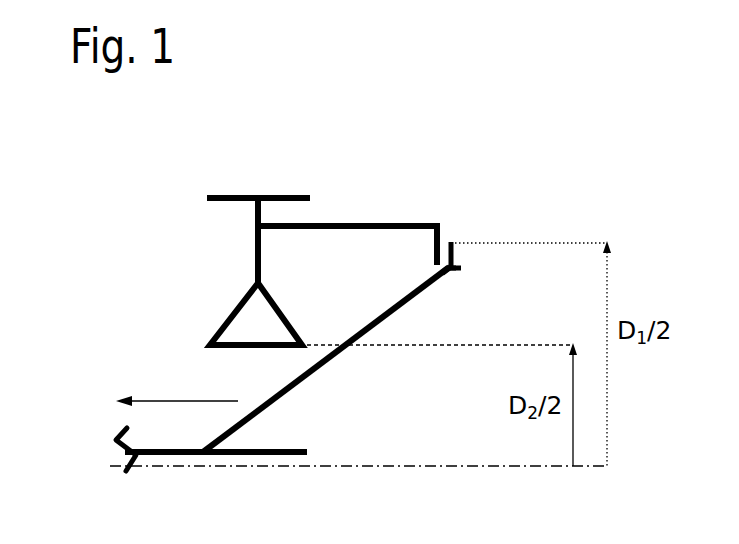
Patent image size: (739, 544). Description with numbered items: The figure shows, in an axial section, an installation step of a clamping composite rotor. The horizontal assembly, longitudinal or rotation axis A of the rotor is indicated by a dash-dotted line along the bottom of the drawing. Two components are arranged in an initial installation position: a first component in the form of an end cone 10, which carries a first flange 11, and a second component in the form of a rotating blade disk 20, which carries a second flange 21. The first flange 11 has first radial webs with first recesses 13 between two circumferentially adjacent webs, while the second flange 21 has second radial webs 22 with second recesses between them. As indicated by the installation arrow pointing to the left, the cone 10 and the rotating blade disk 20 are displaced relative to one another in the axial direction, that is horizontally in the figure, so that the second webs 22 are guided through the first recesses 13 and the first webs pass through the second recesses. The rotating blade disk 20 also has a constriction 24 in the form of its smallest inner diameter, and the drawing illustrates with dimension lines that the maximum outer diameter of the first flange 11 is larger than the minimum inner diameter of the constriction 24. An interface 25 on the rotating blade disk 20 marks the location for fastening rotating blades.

The cone 10 is at (323, 363).
The first flange 11 is at (452, 242).
The first recesses 13 is at (455, 256).
The rotating blade disk 20 is at (257, 227).
The second flange 21 is at (447, 272).
The second radial webs 22 is at (437, 247).
The constriction 24 is at (178, 343).
The interface for fastening rotating blades 25 is at (247, 196).
The assembly or longitudinal or rotation axis A is at (395, 467).